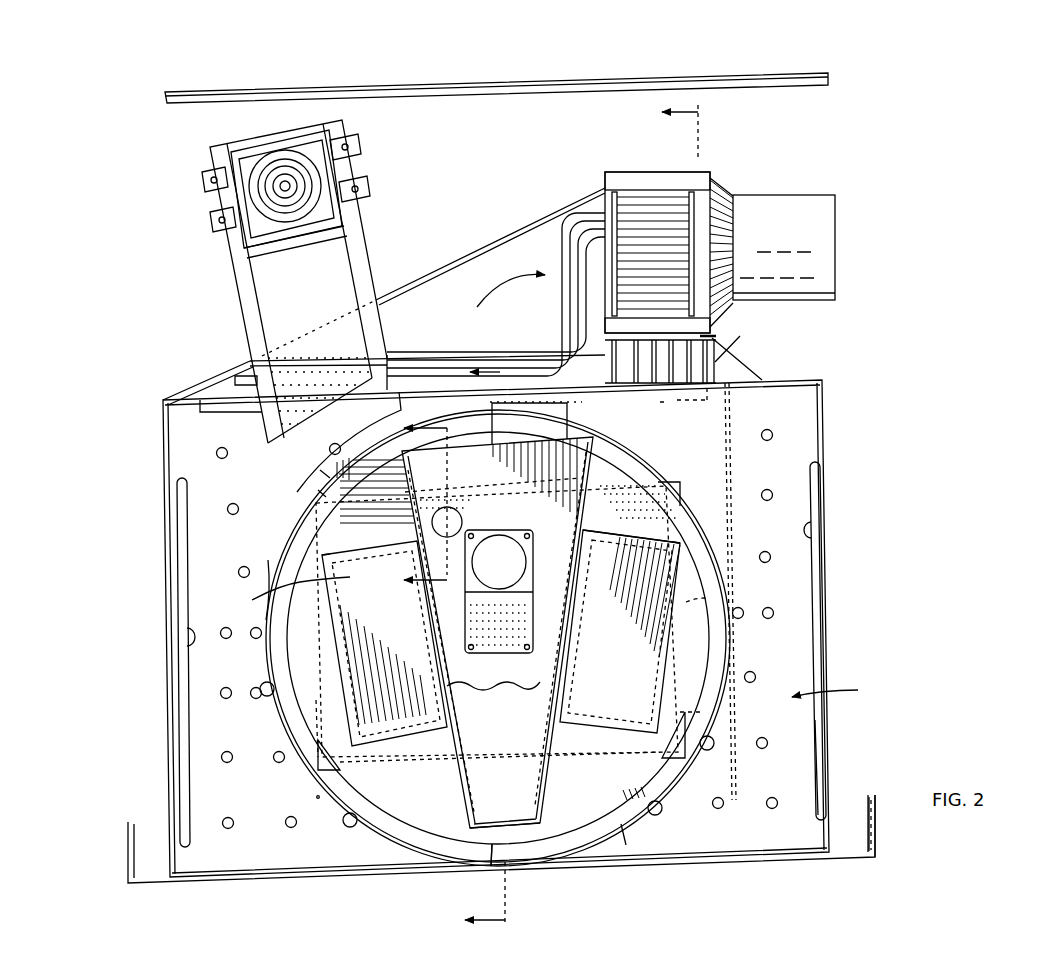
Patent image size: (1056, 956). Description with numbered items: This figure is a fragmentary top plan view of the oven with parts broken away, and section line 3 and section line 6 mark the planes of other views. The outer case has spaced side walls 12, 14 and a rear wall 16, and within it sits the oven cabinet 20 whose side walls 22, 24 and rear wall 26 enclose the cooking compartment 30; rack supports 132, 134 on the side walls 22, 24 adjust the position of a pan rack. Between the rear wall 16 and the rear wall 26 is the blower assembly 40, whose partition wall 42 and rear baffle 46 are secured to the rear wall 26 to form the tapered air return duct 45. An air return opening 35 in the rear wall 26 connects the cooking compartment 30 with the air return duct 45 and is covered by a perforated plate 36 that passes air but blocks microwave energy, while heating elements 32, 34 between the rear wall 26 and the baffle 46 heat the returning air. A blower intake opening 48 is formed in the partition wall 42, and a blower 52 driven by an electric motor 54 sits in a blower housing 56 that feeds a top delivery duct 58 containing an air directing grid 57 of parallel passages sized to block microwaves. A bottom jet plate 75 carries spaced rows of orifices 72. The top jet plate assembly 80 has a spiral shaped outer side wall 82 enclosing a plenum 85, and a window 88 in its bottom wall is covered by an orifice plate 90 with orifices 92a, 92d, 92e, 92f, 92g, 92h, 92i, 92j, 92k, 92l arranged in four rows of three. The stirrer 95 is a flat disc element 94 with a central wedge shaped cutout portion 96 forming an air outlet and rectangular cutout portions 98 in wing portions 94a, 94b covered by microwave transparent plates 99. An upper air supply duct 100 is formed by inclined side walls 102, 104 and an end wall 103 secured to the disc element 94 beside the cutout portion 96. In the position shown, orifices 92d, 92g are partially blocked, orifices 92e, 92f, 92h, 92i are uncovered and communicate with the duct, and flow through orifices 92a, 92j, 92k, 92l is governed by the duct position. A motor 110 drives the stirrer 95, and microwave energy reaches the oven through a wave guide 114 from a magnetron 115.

The section line 3- 3 is at (588, 521).
The section line 6- 6 is at (433, 505).
The side wall 12 is at (128, 862).
The side wall 14 is at (875, 832).
The rear wall 16 is at (520, 92).
The oven cabinet 20 is at (833, 423).
The side wall 22 is at (172, 712).
The side wall 24 is at (832, 614).
The rear wall 26 is at (163, 402).
The cooking compartment 30 is at (838, 685).
The heating element 32 is at (470, 370).
The heating element 34 is at (505, 355).
The air return opening 35 is at (232, 380).
The perforated plate 36 is at (228, 415).
The blower assembly 40 is at (597, 177).
The partition wall 42 is at (606, 332).
The air return duct 45 is at (516, 326).
The rear baffle 46 is at (508, 235).
The blower intake opening 48 is at (598, 238).
The blower 52 is at (628, 215).
The electric motor 54 is at (753, 207).
The blower housing 56 is at (623, 172).
The air directing grid 57 is at (718, 337).
The top delivery duct 58 is at (712, 366).
The orifices 72 is at (770, 434).
The bottom jet plate 75 is at (816, 783).
The top jet plate assembly 80 is at (317, 477).
The outer side wall 82 is at (729, 492).
The plenum 85 is at (696, 471).
The window 88 is at (307, 797).
The orifice plate 90 is at (306, 506).
The orifice 92a is at (292, 744).
The orifice 92d is at (452, 722).
The orifice 92e is at (427, 641).
The orifice 92f is at (418, 560).
The orifice 92g is at (540, 731).
The orifice 92h is at (560, 633).
The orifice 92i is at (492, 499).
The orifice 92j is at (700, 708).
The orifice 92k is at (707, 598).
The orifice 92l is at (637, 488).
The disc element 94 is at (423, 812).
The wing portion 94a is at (300, 708).
The wing portion 94b is at (700, 668).
The stirrer 95 is at (291, 552).
The cutout portion 96 is at (536, 820).
The cutout portions 98 is at (501, 641).
The plates 99 is at (322, 558).
The upper air supply duct 100 is at (567, 437).
The side wall 102 is at (383, 452).
The end wall 103 is at (500, 830).
The side wall 104 is at (590, 523).
The motor 110 is at (515, 573).
The wave guide 114 is at (337, 282).
The magnetron 115 is at (248, 144).
The rack support 132 is at (184, 637).
The rack support 134 is at (822, 526).